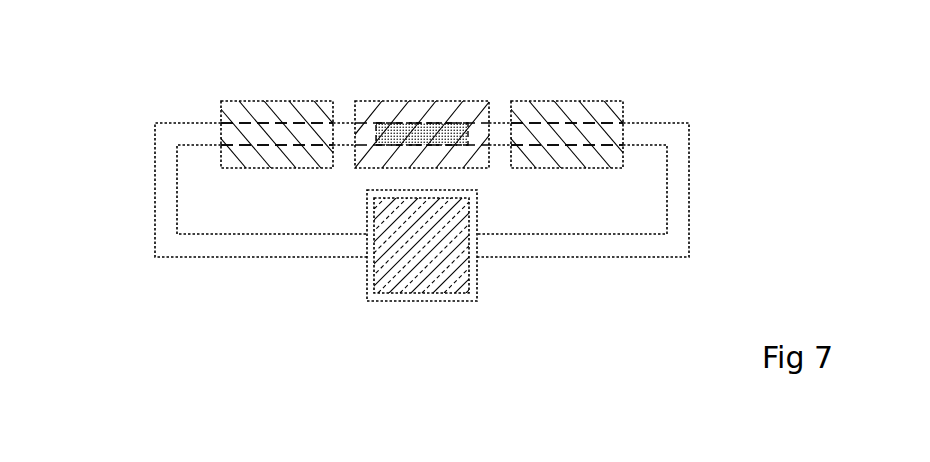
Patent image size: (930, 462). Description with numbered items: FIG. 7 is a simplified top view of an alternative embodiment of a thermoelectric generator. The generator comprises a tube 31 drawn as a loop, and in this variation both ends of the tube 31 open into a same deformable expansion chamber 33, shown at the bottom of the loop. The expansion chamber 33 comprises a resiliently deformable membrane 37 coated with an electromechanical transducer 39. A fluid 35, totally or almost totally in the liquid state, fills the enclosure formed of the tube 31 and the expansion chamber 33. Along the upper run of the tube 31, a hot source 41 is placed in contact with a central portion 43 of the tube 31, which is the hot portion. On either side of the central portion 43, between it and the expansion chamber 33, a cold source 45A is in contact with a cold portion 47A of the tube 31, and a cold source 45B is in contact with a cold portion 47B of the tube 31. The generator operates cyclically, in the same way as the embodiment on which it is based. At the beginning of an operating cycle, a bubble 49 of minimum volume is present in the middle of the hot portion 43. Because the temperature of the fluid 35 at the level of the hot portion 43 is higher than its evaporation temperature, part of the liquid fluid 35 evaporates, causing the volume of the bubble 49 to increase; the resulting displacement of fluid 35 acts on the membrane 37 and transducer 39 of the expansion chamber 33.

The tube 31 is at (207, 258).
The deformable expansion chamber 33 is at (420, 280).
The fluid 35 is at (168, 187).
The resiliently deformable membrane 37 is at (365, 299).
The electromechanical transducer 39 is at (392, 288).
The hot source 41 is at (382, 112).
The central portion 43 is at (453, 123).
The cold source 45A is at (303, 112).
The cold source 45B is at (590, 112).
The cold portion 47A is at (273, 122).
The cold portion 47B is at (537, 122).
The bubble 49 is at (428, 135).